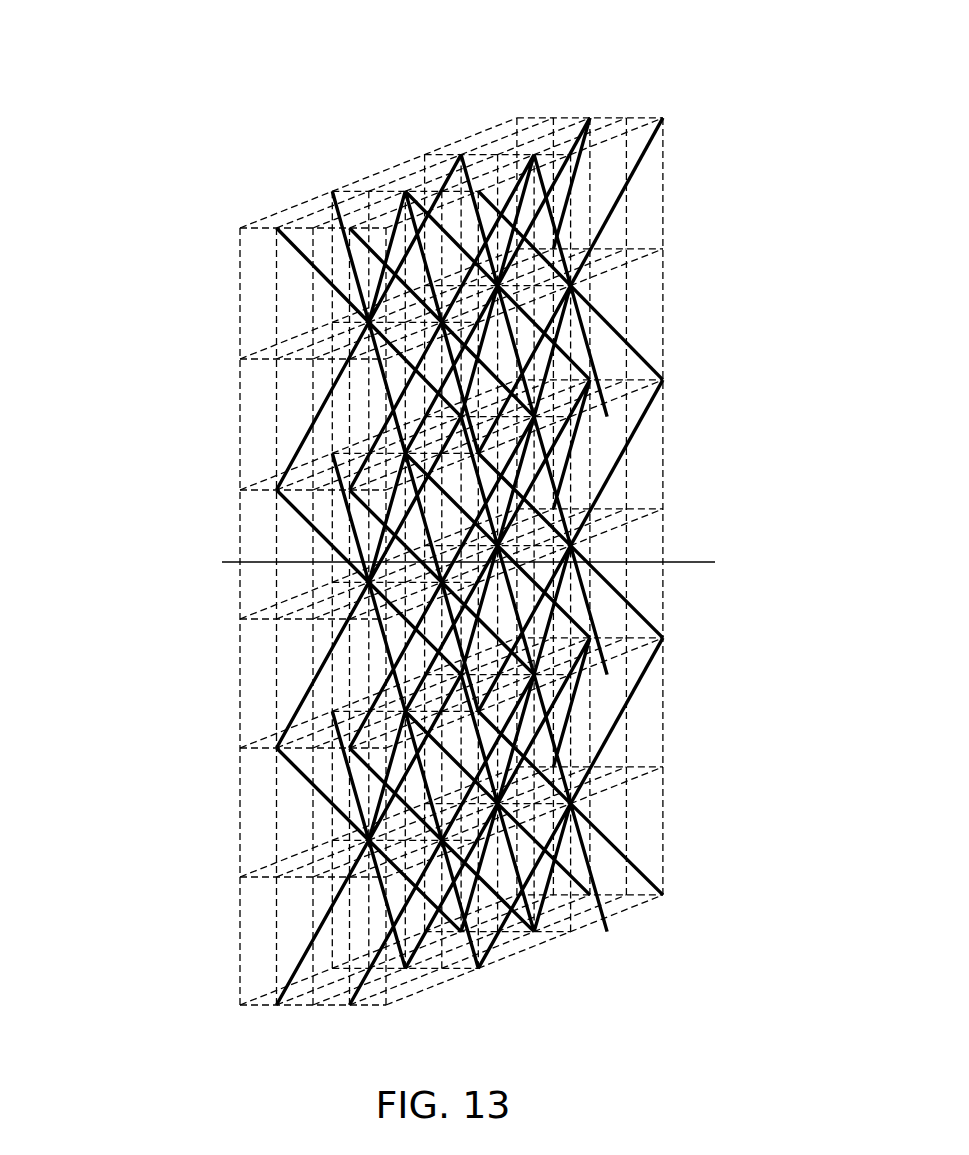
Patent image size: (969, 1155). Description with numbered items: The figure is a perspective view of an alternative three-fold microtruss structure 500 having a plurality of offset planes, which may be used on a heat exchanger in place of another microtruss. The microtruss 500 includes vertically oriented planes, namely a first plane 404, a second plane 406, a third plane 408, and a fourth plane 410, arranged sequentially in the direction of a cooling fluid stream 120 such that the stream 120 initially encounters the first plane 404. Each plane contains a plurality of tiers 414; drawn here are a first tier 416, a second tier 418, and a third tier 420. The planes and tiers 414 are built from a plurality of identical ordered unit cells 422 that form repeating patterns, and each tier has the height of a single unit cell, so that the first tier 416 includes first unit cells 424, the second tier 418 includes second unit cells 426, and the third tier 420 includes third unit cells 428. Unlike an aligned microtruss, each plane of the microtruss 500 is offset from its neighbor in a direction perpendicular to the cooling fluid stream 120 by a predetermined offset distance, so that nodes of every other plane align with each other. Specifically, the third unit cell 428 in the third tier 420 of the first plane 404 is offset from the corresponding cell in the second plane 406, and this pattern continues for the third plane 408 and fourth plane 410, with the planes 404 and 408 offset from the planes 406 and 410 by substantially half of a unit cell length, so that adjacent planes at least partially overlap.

The microtruss structure 500 is at (208, 178).
The tiers 414 is at (118, 518).
The first tier 416 is at (230, 748).
The second tier 418 is at (230, 490).
The third tier 420 is at (230, 228).
The first plane 404 is at (662, 126).
The second plane 406 is at (623, 126).
The third plane 408 is at (587, 126).
The fourth plane 410 is at (557, 126).
The unit cells 422 is at (755, 397).
The first unit cells 424 is at (705, 785).
The second unit cells 426 is at (705, 497).
The third unit cells 428 is at (705, 245).
The cooling fluid stream 120 is at (735, 562).